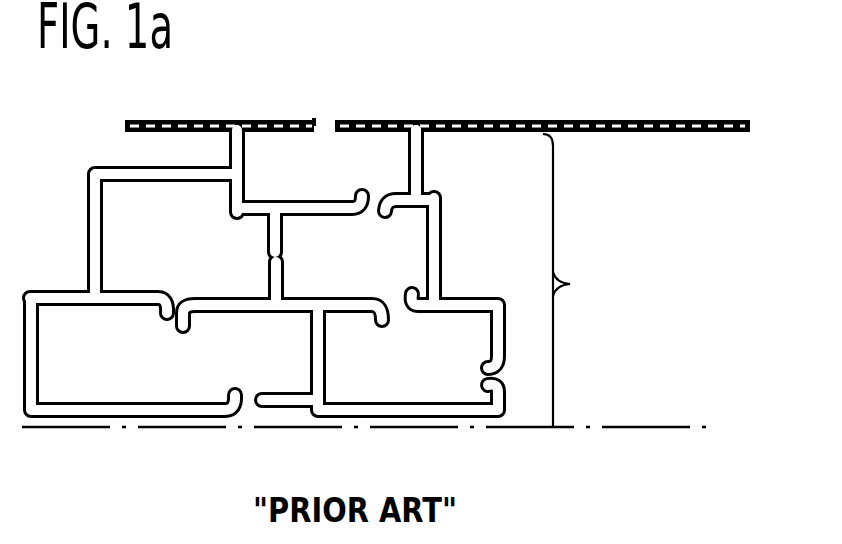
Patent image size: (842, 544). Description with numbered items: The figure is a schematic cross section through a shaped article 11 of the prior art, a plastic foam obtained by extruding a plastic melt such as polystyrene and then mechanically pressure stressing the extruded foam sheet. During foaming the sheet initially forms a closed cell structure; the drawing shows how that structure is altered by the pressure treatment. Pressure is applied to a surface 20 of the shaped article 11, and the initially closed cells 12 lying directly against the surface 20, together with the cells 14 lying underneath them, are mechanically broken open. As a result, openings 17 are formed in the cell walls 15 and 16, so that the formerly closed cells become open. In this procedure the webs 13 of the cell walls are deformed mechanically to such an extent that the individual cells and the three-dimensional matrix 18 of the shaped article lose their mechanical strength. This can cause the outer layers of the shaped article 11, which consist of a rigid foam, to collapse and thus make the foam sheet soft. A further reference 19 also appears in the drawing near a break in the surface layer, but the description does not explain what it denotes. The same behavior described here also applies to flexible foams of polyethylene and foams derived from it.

The shaped article 11 is at (533, 112).
The closed cells 12 is at (422, 167).
The webs 13 is at (268, 258).
The cells 14 is at (112, 213).
The cell wall 15 is at (494, 346).
The cell wall 16 is at (402, 406).
The openings 17 is at (248, 402).
The three-dimensional matrix 18 is at (570, 284).
The gap in face sheet 19 is at (327, 118).
The surface 20 is at (421, 108).